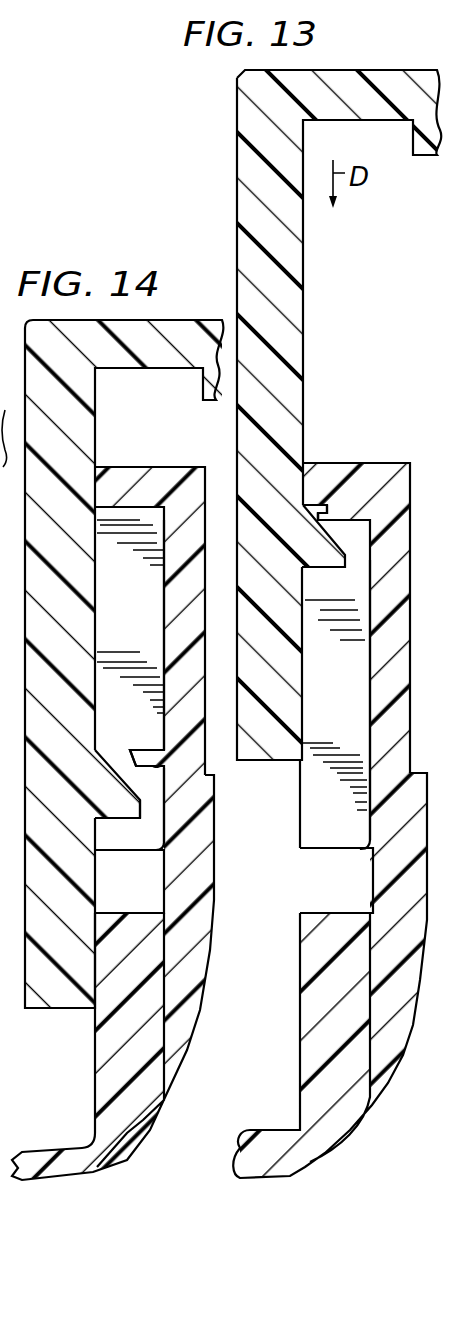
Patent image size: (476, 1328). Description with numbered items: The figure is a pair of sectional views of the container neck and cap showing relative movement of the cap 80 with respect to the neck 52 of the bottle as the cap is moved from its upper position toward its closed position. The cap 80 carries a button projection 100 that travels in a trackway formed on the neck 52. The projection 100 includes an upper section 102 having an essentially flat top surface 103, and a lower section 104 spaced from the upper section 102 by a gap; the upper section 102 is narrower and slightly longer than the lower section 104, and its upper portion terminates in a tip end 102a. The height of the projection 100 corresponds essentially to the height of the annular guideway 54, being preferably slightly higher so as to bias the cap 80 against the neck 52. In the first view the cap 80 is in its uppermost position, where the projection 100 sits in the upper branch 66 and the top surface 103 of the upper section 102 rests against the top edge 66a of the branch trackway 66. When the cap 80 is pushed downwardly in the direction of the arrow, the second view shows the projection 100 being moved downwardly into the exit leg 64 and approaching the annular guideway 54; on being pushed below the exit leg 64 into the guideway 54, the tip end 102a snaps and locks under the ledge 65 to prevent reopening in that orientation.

In FIG. 13, the neck 52 is at (410, 466).
In FIG. 14, the neck 52 is at (212, 472).
In FIG. 13, the annular guideway 54 is at (308, 912).
In FIG. 14, the annular guideway 54 is at (146, 920).
In FIG. 14, the exit leg 64 is at (165, 784).
In FIG. 13, the ledge 65 is at (356, 850).
In FIG. 14, the ledge 65 is at (150, 844).
In FIG. 13, the upper branch 66 is at (370, 782).
In FIG. 13, the top edge 66a is at (320, 510).
In FIG. 13, the cap 80 is at (252, 80).
In FIG. 14, the cap 80 is at (163, 327).
In FIG. 13, the projection 100 is at (346, 558).
In FIG. 14, the projection 100 is at (88, 775).
In FIG. 14, the upper section 102 is at (110, 757).
In FIG. 14, the tip end 102a is at (153, 760).
In FIG. 13, the top surface 103 is at (357, 512).
In FIG. 14, the lower section 104 is at (136, 803).